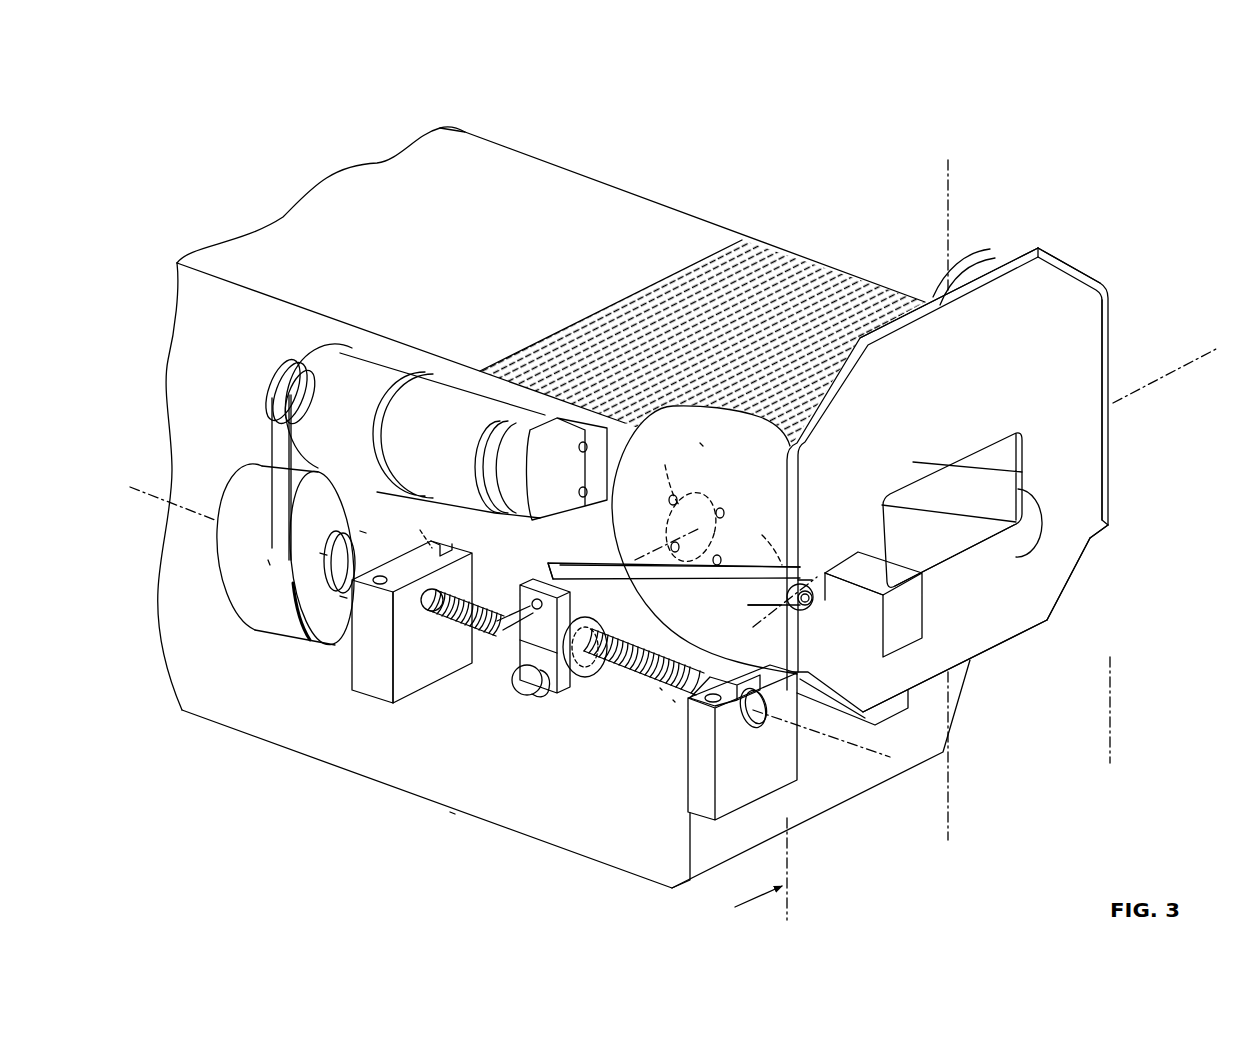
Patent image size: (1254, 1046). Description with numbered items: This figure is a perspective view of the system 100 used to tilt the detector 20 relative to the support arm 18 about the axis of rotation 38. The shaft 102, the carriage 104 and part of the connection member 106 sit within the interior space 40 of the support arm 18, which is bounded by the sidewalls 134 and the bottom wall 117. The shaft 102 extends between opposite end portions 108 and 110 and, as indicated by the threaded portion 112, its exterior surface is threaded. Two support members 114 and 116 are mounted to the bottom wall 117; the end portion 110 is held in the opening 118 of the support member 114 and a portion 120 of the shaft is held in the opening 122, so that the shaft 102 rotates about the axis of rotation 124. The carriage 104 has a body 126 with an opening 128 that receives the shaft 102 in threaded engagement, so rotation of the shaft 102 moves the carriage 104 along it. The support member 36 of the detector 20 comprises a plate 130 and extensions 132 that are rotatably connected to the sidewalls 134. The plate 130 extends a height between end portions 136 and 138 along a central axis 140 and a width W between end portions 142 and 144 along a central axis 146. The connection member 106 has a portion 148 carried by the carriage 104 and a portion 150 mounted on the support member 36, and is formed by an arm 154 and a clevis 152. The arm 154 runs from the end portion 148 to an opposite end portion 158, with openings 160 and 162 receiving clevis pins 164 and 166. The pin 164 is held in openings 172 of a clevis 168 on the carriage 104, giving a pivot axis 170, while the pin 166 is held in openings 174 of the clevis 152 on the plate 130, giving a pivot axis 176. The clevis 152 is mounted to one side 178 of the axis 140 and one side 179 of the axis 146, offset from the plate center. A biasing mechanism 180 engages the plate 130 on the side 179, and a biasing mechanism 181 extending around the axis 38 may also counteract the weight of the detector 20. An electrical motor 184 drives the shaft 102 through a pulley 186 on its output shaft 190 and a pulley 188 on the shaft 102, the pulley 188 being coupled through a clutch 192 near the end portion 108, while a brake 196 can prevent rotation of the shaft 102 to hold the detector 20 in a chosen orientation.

The support arm 18 is at (192, 708).
The detector 20 is at (1128, 270).
The support member 36 is at (1040, 283).
The axis of rotation 38 is at (650, 552).
The interior space 40 is at (296, 738).
The system 100 is at (800, 244).
The shaft 102 is at (660, 689).
The carriage 104 is at (546, 647).
The connection member 106 is at (748, 590).
The end portion 108 is at (297, 546).
The end portion 110 is at (702, 672).
The threaded portion 112 is at (672, 703).
The support member 114 is at (765, 781).
The support member 116 is at (350, 687).
The bottom wall 117 is at (450, 812).
The opening 118 is at (767, 715).
The portion 120 is at (445, 545).
The opening 122 is at (366, 665).
The axis of rotation 124 is at (158, 498).
The body 126 is at (540, 687).
The opening 128 is at (598, 640).
The plate 130 is at (1017, 625).
The extensions 132 is at (1000, 251).
The sidewalls 134 is at (580, 178).
The end portion 136 is at (1067, 608).
The end portion 138 is at (907, 278).
The central axis 140 is at (945, 196).
The end portion 142 is at (1114, 318).
The end portion 144 is at (703, 444).
The central axis 146 is at (1158, 382).
The end portion 148 is at (584, 560).
The portion 150 is at (817, 580).
The clevis 152 is at (873, 604).
The arm 154 is at (680, 582).
The end portion 158 is at (816, 492).
The opening 160 is at (576, 562).
The opening 162 is at (803, 586).
The clevis pin 164 is at (492, 630).
The clevis pin 166 is at (808, 603).
The clevis 168 is at (535, 650).
The axis of rotation 170 is at (492, 613).
The openings 172 is at (535, 598).
The openings 174 is at (820, 582).
The axis of rotation 176 is at (917, 552).
The side 178 is at (875, 428).
The side 179 is at (1092, 538).
The biasing mechanism 180 is at (1032, 522).
The biasing mechanism 181 is at (708, 468).
The electrical motor 184 is at (441, 408).
The pulley 186 is at (266, 382).
The pulley 188 is at (297, 547).
The output shaft 190 is at (292, 398).
The clutch 192 is at (213, 567).
The brake 196 is at (681, 705).
The width W is at (1114, 721).